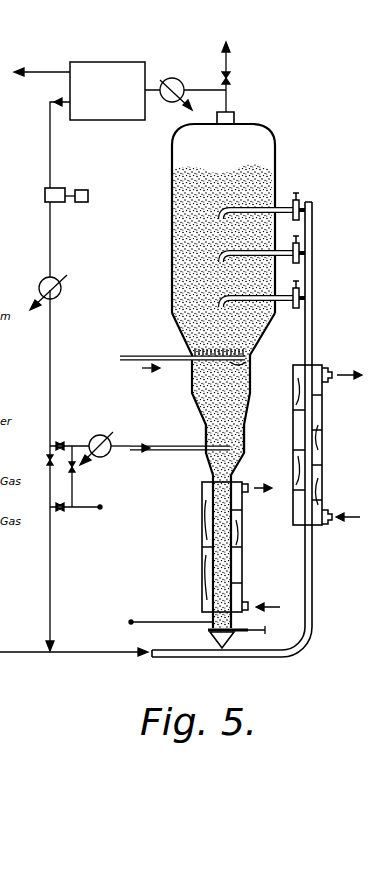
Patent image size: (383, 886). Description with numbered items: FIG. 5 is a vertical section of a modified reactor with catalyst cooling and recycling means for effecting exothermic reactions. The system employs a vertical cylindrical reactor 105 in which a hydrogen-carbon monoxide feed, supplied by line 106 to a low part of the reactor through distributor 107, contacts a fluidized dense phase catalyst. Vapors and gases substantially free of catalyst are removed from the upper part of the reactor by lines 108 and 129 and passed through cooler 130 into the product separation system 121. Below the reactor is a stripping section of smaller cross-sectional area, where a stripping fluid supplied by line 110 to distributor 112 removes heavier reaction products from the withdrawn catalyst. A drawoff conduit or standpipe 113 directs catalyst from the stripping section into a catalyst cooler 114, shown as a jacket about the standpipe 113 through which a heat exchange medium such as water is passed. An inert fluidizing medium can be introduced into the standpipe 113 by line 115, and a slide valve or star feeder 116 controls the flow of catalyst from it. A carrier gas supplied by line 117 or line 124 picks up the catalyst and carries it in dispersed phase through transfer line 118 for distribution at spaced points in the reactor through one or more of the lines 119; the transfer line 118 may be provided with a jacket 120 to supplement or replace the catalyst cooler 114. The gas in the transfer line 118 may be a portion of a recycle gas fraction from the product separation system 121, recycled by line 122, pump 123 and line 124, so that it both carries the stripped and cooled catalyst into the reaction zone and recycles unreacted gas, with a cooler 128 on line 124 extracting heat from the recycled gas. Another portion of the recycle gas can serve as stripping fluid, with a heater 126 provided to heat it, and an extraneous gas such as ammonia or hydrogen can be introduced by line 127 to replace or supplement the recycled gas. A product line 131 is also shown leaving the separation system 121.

The vertical cylindrical reactor 105 is at (183, 230).
The feed line 106 is at (124, 363).
The distributor 107 is at (250, 364).
The vapor removal line 108 is at (228, 112).
The stripping fluid line 110 is at (192, 452).
The distributor 112 is at (238, 453).
The drawoff conduit (standpipe) 113 is at (212, 538).
The catalyst cooler 114 is at (242, 575).
The fluidizing medium line 115 is at (173, 620).
The slide valve or star feeder 116 is at (211, 635).
The carrier gas line 117 is at (24, 655).
The transfer line 118 is at (312, 333).
The distribution lines 119 is at (221, 219).
The jacket 120 is at (322, 420).
The product separation system 121 is at (118, 62).
The recycle line 122 is at (50, 155).
The pump 123 is at (88, 196).
The recycle gas line 124 is at (50, 590).
The heater 126 is at (110, 456).
The extraneous gas line 127 is at (90, 509).
The cooler 128 is at (60, 291).
The vapor removal line 129 is at (222, 79).
The cooler 130 is at (192, 63).
The product outlet line 131 is at (50, 52).